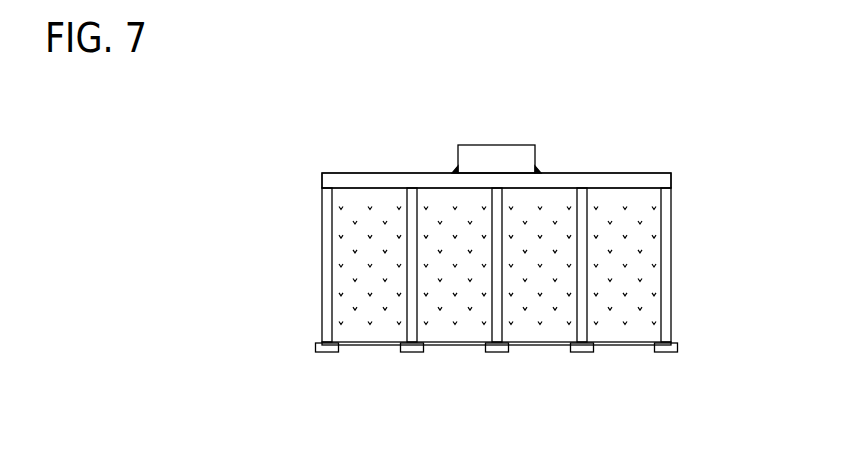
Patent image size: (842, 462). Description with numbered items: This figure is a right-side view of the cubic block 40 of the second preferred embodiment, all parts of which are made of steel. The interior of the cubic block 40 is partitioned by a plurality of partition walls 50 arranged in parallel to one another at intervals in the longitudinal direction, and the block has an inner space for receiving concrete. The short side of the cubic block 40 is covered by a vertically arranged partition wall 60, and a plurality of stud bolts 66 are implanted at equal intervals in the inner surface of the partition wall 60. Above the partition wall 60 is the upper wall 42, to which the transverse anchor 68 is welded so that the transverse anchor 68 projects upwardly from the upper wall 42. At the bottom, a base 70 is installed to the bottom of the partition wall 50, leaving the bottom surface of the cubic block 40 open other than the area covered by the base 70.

The cubic block 40 is at (443, 131).
The upper wall 42 is at (369, 173).
The transverse anchor 68 is at (510, 145).
The partition wall 50 is at (323, 263).
The stud bolt 66 is at (655, 237).
The partition wall 60 is at (653, 338).
The base 70 is at (663, 352).